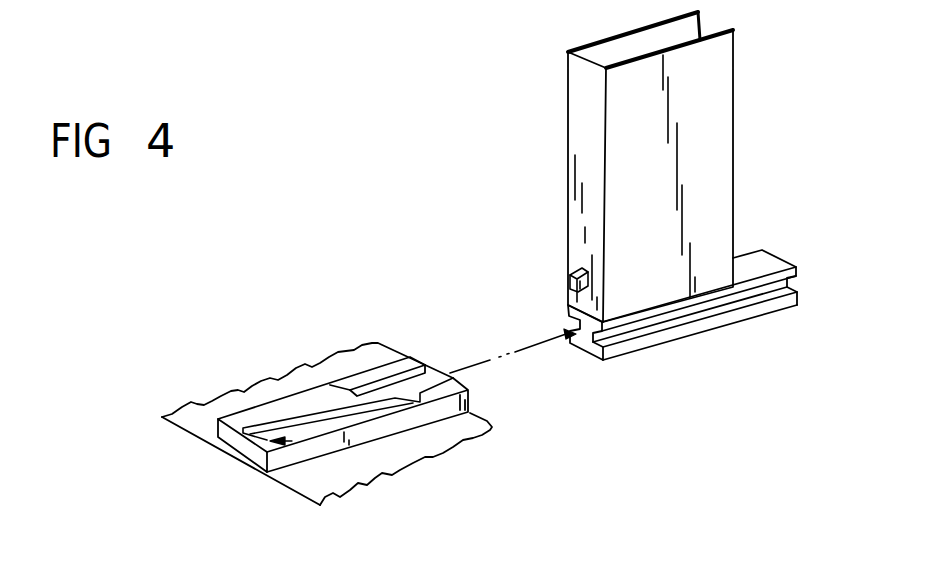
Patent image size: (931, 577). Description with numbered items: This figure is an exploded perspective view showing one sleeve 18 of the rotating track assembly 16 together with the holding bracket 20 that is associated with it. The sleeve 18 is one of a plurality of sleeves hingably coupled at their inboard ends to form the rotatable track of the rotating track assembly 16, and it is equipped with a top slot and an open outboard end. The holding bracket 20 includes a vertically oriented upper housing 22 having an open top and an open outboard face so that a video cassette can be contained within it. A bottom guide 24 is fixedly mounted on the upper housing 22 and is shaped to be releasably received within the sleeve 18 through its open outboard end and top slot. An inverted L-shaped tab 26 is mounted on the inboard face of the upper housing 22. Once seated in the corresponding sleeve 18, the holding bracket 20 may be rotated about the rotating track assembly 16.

The rotating track assembly 16 is at (238, 383).
The sleeve 18 is at (384, 373).
The holding bracket 20 is at (685, 279).
The upper housing 22 is at (710, 82).
The bottom guide 24 is at (622, 342).
The inverted L-shaped tab 26 is at (569, 284).